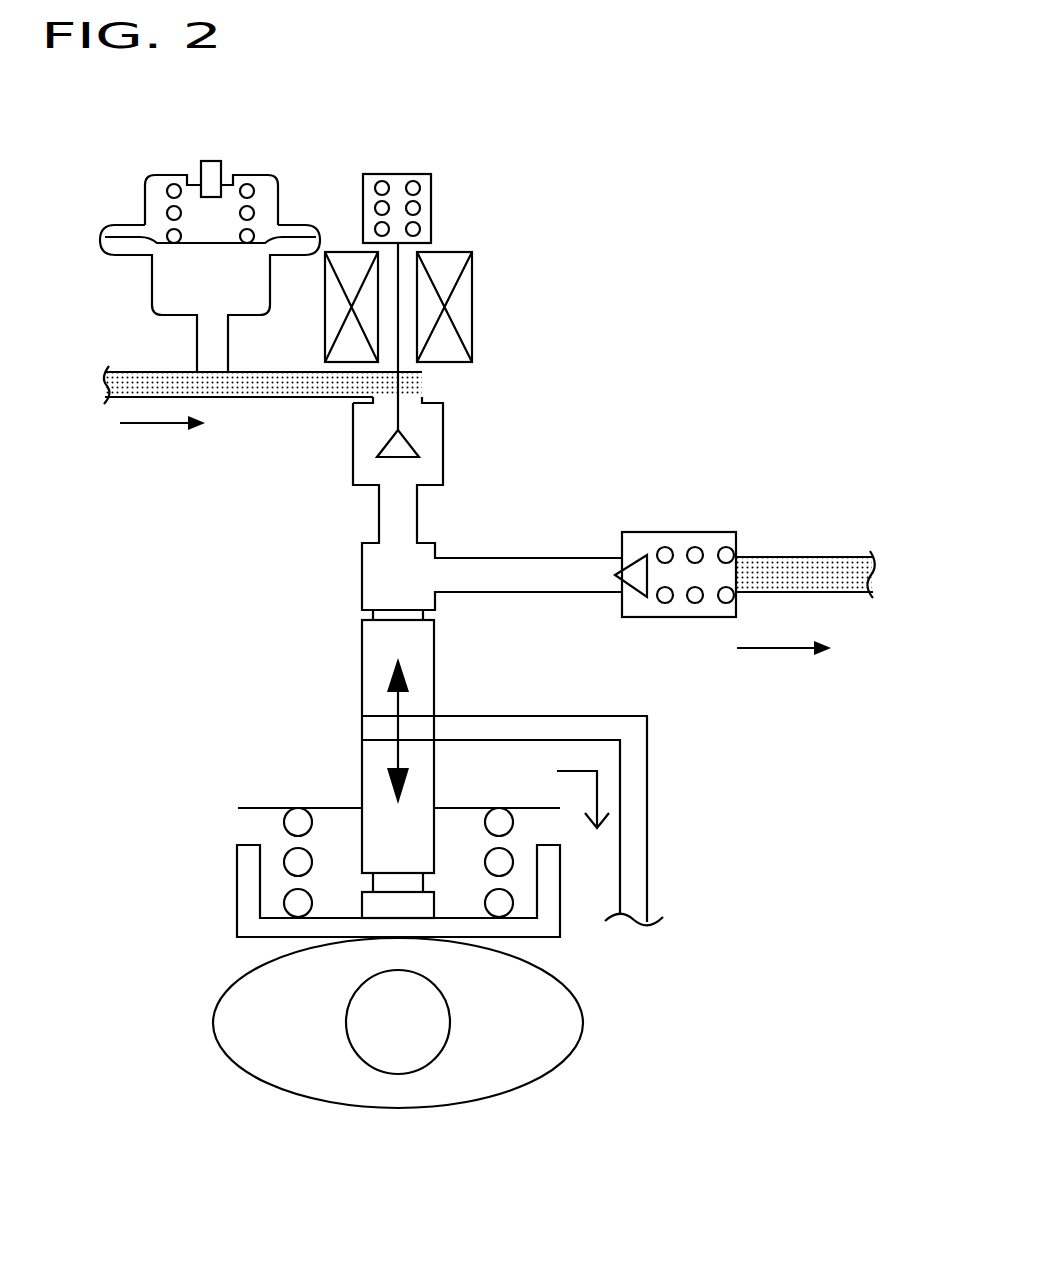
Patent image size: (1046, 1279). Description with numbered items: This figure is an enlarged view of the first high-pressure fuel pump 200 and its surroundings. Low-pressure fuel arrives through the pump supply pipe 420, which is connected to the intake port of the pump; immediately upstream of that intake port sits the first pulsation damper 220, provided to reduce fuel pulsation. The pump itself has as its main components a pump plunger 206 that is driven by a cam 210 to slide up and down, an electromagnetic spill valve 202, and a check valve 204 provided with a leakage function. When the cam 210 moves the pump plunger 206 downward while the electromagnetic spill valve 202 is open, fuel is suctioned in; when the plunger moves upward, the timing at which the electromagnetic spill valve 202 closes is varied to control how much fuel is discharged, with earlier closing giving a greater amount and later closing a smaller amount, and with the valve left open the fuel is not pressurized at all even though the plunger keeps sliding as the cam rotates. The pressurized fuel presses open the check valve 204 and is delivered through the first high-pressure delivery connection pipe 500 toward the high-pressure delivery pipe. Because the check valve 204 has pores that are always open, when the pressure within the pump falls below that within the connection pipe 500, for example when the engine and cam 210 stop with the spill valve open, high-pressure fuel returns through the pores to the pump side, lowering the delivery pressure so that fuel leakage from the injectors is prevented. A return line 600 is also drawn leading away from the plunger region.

The first high-pressure fuel pump 200 is at (503, 504).
The electromagnetic spill valve 202 is at (488, 288).
The check valve 204 is at (677, 532).
The pump plunger 206 is at (322, 773).
The cam 210 is at (545, 1075).
The first pulsation damper 220 is at (251, 175).
The pump supply pipe 420 is at (265, 389).
The first high-pressure delivery connection pipe 500 is at (790, 557).
The return passage 600 is at (637, 785).